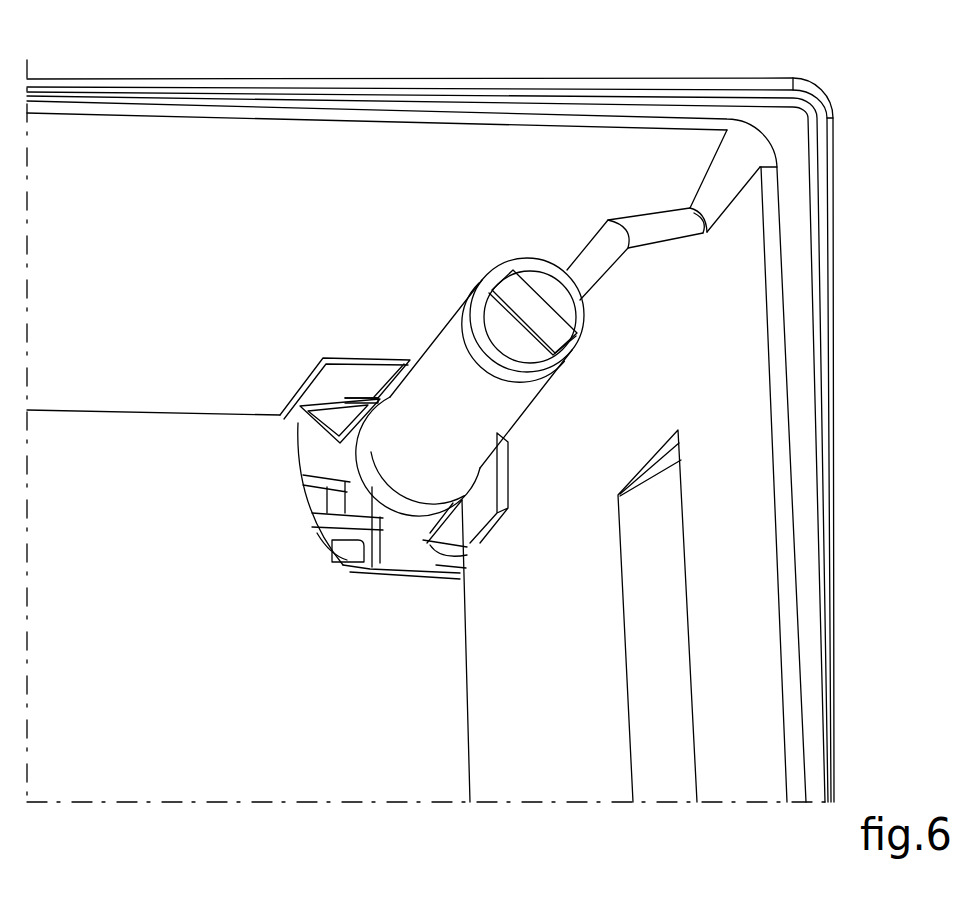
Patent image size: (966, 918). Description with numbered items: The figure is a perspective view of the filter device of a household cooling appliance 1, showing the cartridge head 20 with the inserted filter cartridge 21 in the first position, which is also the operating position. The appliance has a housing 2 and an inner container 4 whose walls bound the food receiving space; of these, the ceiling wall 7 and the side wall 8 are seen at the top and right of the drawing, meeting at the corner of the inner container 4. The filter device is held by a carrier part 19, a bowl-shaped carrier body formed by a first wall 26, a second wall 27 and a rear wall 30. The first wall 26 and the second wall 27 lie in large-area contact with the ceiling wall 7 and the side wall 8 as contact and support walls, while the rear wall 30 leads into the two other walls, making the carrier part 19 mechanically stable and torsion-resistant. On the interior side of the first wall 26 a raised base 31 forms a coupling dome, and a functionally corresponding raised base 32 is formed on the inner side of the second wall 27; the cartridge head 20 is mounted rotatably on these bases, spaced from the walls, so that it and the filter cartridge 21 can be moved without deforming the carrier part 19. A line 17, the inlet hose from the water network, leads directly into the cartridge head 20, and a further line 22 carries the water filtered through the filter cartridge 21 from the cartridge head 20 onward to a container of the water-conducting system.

The household cooling appliance 1 is at (847, 92).
The housing 2 is at (836, 428).
The inner container 4 is at (791, 307).
The ceiling wall 7 is at (515, 150).
The side wall 8 is at (753, 497).
The line 17 is at (312, 480).
The carrier part 19 is at (415, 578).
The cartridge head 20 is at (373, 472).
The filter cartridge 21 is at (422, 427).
The further line 22 is at (318, 522).
The first wall 26 is at (347, 373).
The second wall 27 is at (485, 503).
The rear wall 30 is at (352, 566).
The raised base 31 is at (305, 423).
The raised base 32 is at (440, 573).